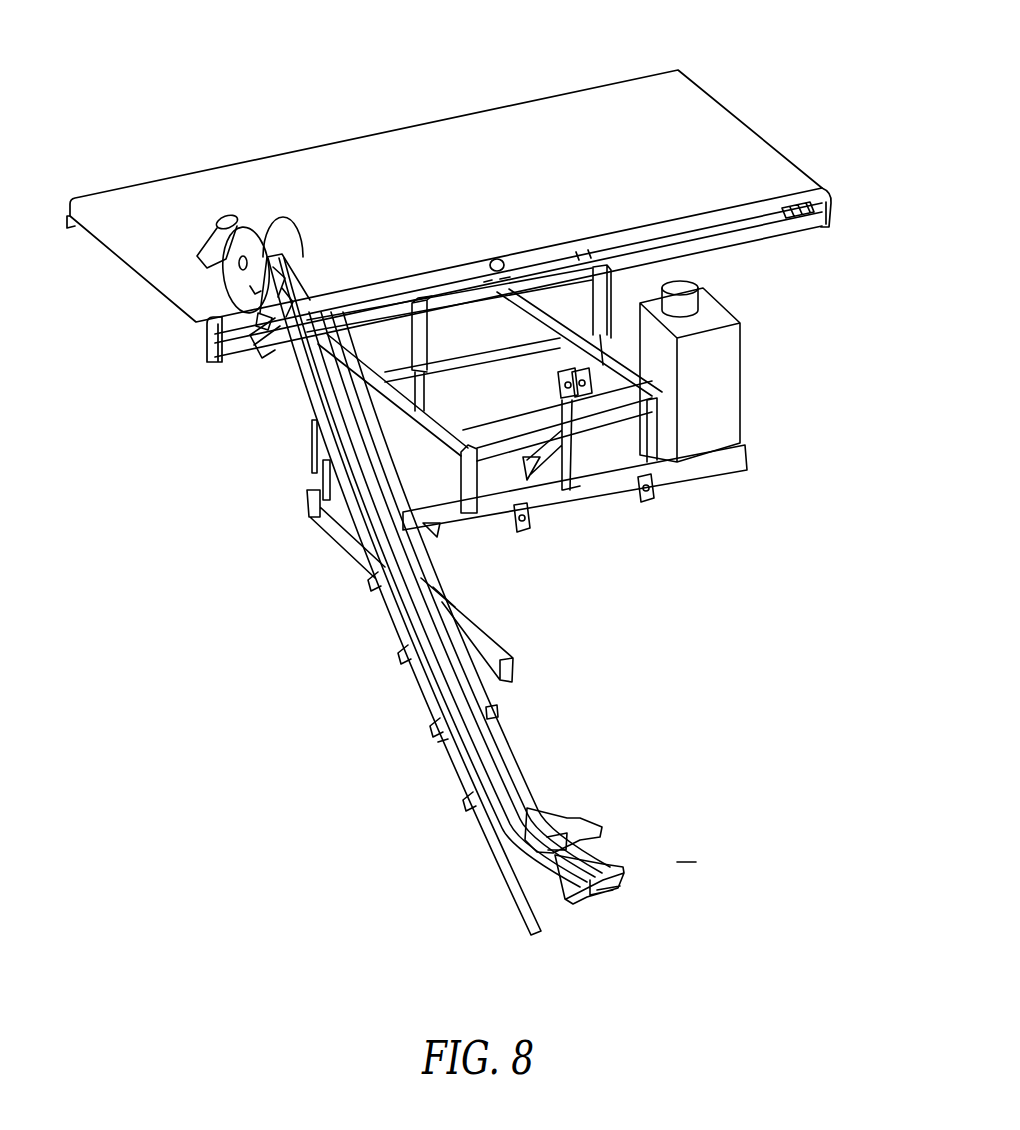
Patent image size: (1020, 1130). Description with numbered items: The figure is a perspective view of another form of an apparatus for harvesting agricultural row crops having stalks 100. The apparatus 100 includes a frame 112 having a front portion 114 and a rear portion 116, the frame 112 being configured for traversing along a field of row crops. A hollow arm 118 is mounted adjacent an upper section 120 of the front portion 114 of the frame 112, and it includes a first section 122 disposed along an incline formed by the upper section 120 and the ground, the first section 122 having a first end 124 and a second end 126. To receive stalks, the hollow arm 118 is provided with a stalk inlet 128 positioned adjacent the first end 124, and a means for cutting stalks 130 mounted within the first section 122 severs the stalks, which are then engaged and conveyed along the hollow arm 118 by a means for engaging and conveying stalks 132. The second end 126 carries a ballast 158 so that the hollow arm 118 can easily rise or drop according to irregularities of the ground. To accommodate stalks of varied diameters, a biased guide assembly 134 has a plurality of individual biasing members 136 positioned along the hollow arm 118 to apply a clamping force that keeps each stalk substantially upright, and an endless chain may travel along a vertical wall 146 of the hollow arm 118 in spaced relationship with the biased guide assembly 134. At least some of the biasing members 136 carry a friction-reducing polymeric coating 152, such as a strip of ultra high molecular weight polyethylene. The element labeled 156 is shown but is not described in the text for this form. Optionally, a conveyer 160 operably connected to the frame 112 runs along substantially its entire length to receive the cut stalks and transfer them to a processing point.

The apparatus for harvesting agricultural row crops having stalks 100 is at (580, 707).
The frame 112 is at (443, 418).
The front portion 114 is at (563, 444).
The rear portion 116 is at (454, 174).
The hollow arm 118 is at (510, 753).
The upper section 120 is at (218, 360).
The first section 122 is at (284, 404).
The first end 124 is at (620, 892).
The second end 126 is at (212, 270).
The stalk inlet 128 is at (530, 934).
The means for cutting stalks 130 is at (540, 857).
The means for engaging and conveying stalks 132 is at (473, 740).
The biased guide assembly 134 is at (433, 677).
The individual biasing members 136 is at (417, 667).
The vertical wall 146 is at (470, 697).
The friction-reducing polymeric coating 152 is at (447, 693).
The mounting lugs 156 is at (577, 403).
The ballast 158 is at (212, 238).
The conveyer 160 is at (617, 100).